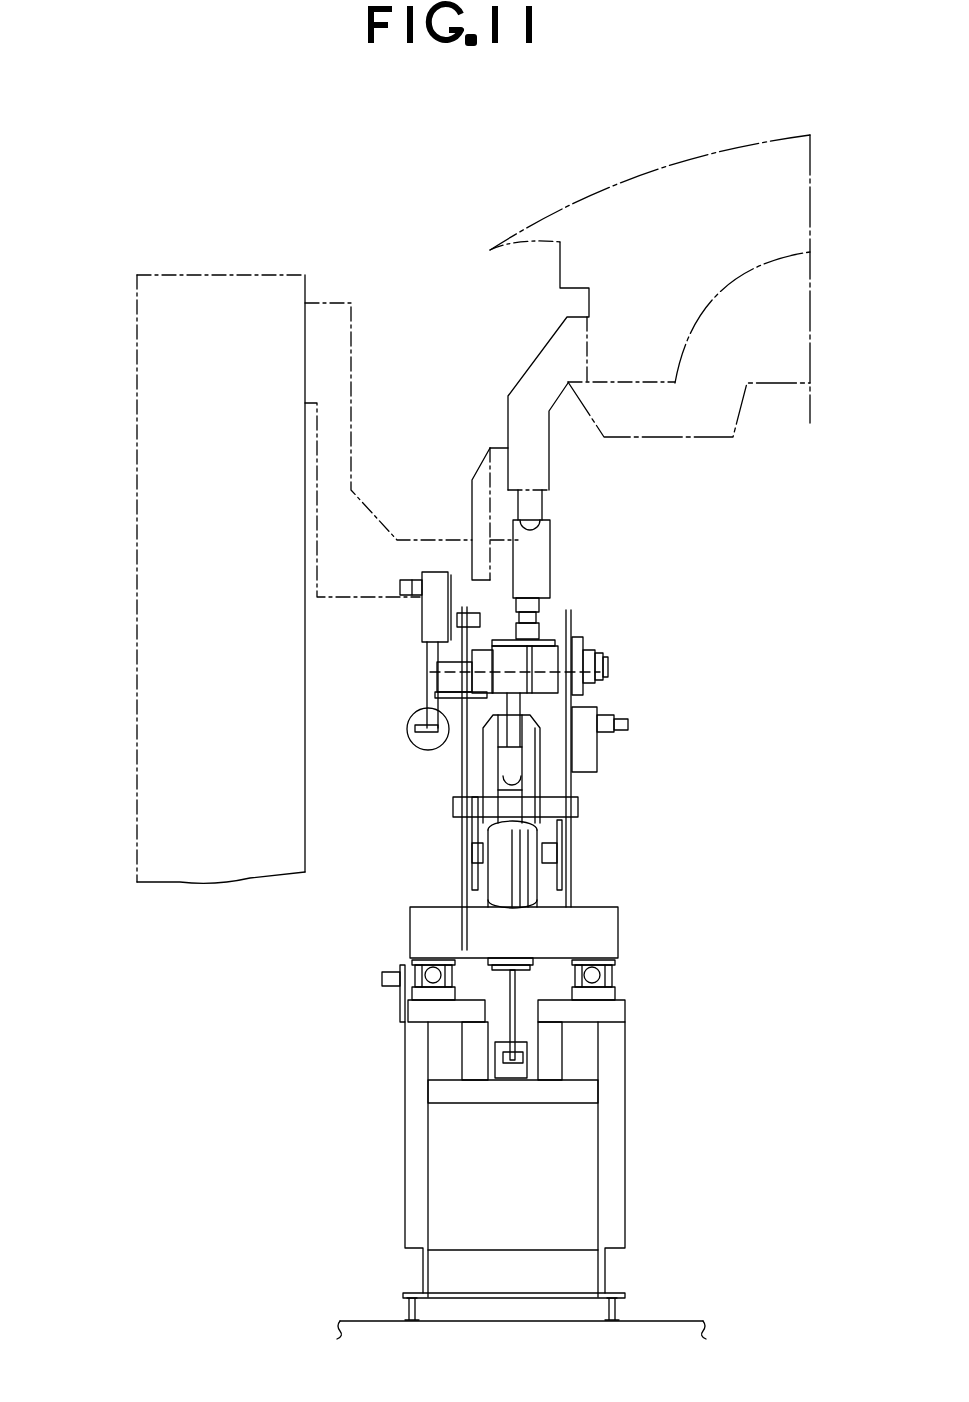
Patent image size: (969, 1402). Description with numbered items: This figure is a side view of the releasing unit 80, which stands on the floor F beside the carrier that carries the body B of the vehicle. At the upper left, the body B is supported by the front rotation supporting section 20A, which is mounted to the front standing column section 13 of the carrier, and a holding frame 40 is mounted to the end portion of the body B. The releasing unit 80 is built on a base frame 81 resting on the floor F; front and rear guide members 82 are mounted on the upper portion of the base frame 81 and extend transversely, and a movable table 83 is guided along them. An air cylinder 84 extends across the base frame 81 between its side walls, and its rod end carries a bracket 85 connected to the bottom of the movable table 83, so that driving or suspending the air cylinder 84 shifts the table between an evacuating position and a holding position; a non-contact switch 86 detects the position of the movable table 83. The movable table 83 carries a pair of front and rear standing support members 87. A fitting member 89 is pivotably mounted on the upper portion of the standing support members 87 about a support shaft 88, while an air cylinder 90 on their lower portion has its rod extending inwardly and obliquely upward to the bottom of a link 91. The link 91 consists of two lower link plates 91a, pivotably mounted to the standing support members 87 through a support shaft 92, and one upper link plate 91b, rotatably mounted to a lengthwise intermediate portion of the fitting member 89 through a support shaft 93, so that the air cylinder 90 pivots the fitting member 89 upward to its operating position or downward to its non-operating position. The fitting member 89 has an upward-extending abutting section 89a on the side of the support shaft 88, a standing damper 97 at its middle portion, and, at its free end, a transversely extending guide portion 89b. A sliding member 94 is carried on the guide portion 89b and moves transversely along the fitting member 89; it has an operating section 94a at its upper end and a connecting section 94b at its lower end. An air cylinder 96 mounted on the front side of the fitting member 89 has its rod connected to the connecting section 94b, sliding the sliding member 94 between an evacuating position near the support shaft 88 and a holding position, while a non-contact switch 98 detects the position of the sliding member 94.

The front standing column section 13 is at (137, 582).
The front rotation supporting section 20A is at (368, 460).
The holding frame 40 is at (512, 351).
The body of the vehicle B is at (608, 180).
The releasing unit 80 is at (733, 687).
The base frame 81 is at (645, 1110).
The guide members 82 is at (432, 963).
The movable table 83 is at (619, 932).
The air cylinder 84 is at (512, 1067).
The bracket 85 is at (508, 982).
The non-contact switch 86 is at (382, 980).
The standing support members 87 is at (470, 838).
The support shaft 88 is at (606, 672).
The fitting member 89 is at (560, 650).
The abutting section 89a is at (543, 640).
The guide portion 89b is at (435, 687).
The air cylinder 90 is at (545, 880).
The link 91 is at (722, 735).
The lower link plates 91a is at (500, 760).
The upper link plate 91b is at (540, 722).
The support shaft 92 is at (563, 807).
The support shaft 93 is at (596, 690).
The sliding member 94 is at (425, 643).
The operating section 94a is at (430, 583).
The connecting section 94b is at (422, 700).
The air cylinder 96 is at (430, 750).
The damper 97 is at (540, 625).
The non-contact switch 98 is at (471, 612).
The floor F is at (666, 1321).